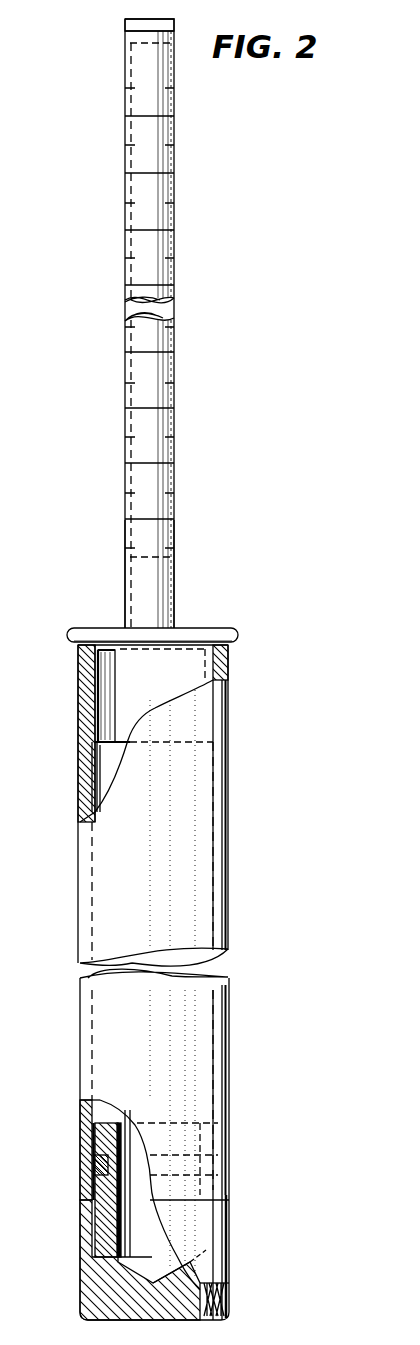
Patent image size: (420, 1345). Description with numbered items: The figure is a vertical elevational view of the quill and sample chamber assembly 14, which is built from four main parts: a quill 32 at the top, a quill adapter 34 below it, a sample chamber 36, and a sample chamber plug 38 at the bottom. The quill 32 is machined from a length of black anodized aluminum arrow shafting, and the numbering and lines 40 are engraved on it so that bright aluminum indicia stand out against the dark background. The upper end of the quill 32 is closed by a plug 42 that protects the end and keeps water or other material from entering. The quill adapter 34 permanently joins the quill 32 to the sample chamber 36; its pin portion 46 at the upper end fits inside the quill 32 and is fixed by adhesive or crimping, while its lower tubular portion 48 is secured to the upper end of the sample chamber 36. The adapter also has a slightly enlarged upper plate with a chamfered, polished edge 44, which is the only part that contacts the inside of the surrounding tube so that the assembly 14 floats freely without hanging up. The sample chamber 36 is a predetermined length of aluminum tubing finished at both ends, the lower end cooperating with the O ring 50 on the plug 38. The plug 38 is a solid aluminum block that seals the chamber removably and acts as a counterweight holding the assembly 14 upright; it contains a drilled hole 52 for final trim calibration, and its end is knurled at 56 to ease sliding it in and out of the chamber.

The quill and sample chamber assembly 14 is at (108, 581).
The quill 32 is at (137, 276).
The quill adapter 34 is at (229, 625).
The sample chamber 36 is at (81, 895).
The sample chamber plug 38 is at (220, 1225).
The numbering and lines 40 is at (133, 172).
The plug 42 is at (125, 25).
The edge 44 is at (70, 630).
The pin portion 46 is at (155, 598).
The tubular portion 48 is at (103, 692).
The O ring 50 is at (94, 1163).
The drilled hole 52 is at (126, 1262).
The knurled end 56 is at (232, 1292).